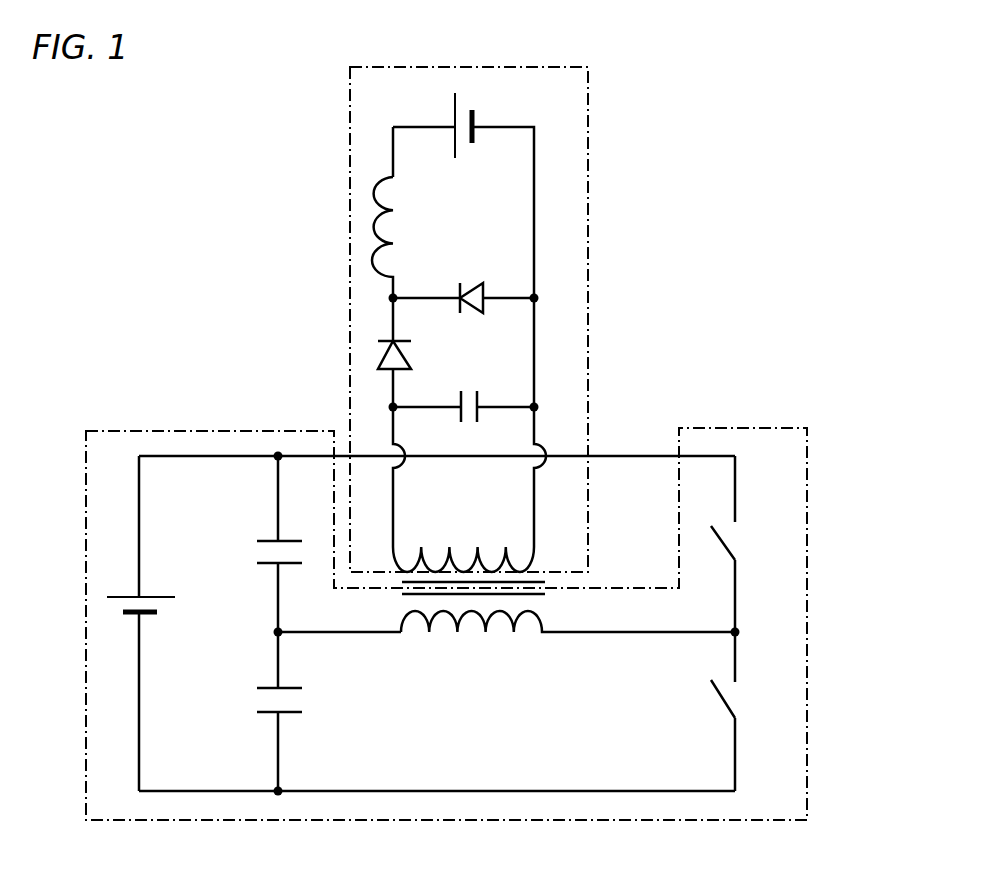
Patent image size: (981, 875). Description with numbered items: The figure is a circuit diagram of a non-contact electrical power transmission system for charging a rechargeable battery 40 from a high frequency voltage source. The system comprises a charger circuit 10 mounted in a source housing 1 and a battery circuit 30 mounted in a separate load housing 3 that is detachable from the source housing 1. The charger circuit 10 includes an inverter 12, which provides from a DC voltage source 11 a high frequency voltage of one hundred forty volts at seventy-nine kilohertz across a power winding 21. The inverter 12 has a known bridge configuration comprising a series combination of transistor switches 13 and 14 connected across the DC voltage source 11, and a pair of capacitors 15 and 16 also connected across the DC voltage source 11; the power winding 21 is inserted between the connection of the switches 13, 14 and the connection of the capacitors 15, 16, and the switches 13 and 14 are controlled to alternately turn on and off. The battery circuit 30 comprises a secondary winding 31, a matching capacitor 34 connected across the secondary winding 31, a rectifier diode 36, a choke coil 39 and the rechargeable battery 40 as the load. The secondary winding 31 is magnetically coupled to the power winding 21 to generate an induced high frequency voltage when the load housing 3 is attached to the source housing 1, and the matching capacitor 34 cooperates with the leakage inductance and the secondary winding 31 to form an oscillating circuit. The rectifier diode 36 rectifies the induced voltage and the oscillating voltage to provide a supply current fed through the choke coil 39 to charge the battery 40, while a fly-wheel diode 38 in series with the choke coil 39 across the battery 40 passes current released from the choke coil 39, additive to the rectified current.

The source housing 1 is at (807, 426).
The load housing 3 is at (587, 64).
The charger circuit 10 is at (160, 454).
The DC voltage source 11 is at (130, 588).
The inverter 12 is at (341, 655).
The transistor switch 13 is at (740, 535).
The transistor switch 14 is at (740, 698).
The capacitor 15 is at (255, 553).
The capacitor 16 is at (258, 704).
The power winding 21 is at (474, 637).
The battery circuit 30 is at (538, 198).
The secondary winding 31 is at (468, 545).
The matching capacitor 34 is at (466, 388).
The rectifier diode 36 is at (373, 351).
The fly-wheel diode 38 is at (470, 275).
The choke coil 39 is at (367, 217).
The rechargeable battery 40 is at (463, 93).